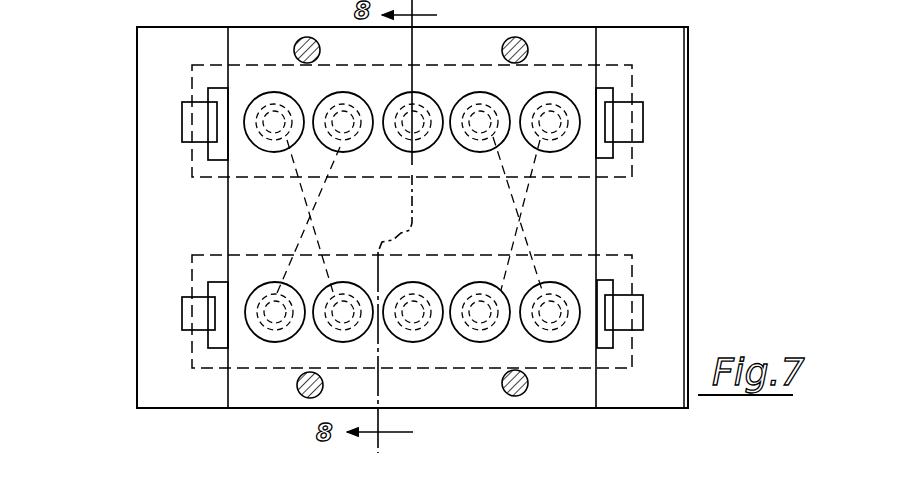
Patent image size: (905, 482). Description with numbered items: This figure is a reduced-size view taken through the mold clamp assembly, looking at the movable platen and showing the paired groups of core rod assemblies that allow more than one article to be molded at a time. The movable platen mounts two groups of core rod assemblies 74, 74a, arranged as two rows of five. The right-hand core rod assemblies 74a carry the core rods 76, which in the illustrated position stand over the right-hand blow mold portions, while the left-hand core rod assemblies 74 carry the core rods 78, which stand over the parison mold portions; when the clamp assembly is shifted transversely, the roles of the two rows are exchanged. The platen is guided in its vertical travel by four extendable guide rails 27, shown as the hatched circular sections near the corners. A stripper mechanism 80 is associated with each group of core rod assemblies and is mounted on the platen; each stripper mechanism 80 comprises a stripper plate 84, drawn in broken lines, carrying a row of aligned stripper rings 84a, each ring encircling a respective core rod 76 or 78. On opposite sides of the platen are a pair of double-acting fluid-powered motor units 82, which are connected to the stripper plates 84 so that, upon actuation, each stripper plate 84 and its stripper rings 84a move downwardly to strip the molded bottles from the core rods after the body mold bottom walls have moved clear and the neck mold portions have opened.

The extendable guide rails 27 is at (305, 43).
The core rod assemblies 74 is at (317, 336).
The core rod assemblies 74a is at (324, 92).
The core rods 76 is at (349, 117).
The core rods 78 is at (265, 306).
The stripper mechanism 80 is at (617, 70).
The fluid powered motor units 82 is at (182, 115).
The stripper plate 84 is at (208, 63).
The stripper rings 84a is at (409, 215).